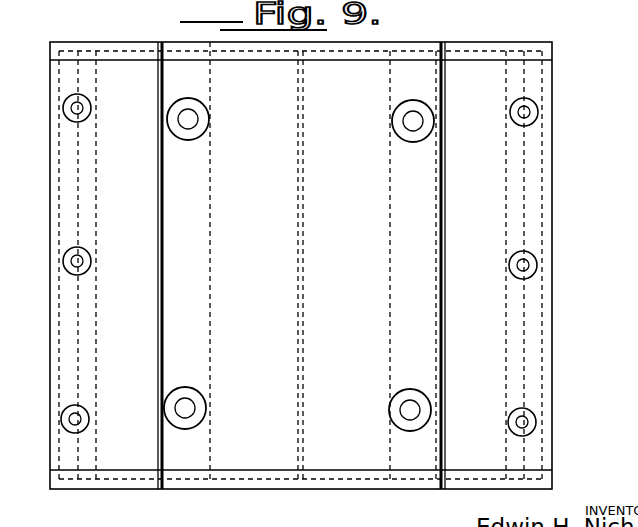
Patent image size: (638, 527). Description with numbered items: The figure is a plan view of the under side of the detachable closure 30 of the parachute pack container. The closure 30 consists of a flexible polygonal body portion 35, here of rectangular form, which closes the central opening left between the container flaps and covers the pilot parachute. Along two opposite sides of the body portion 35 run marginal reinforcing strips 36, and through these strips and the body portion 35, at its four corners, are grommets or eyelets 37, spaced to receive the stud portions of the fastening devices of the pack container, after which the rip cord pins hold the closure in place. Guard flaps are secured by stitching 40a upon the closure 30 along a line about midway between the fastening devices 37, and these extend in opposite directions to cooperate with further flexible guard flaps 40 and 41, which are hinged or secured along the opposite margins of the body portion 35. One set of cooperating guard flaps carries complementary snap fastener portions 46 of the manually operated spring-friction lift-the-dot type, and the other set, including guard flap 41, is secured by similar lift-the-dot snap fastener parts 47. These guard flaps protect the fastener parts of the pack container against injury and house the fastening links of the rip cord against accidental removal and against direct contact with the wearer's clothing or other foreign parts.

The closure piece 30 is at (246, 452).
The body portion 35 is at (328, 452).
The marginal reinforcing strips 36 is at (210, 90).
The grommets 37 is at (204, 130).
The guard flap 40 is at (533, 357).
The stitching 40a is at (299, 190).
The guard flap 41 is at (66, 360).
The snap fastener portions 46 is at (530, 113).
The snap fastener parts 47 is at (70, 108).